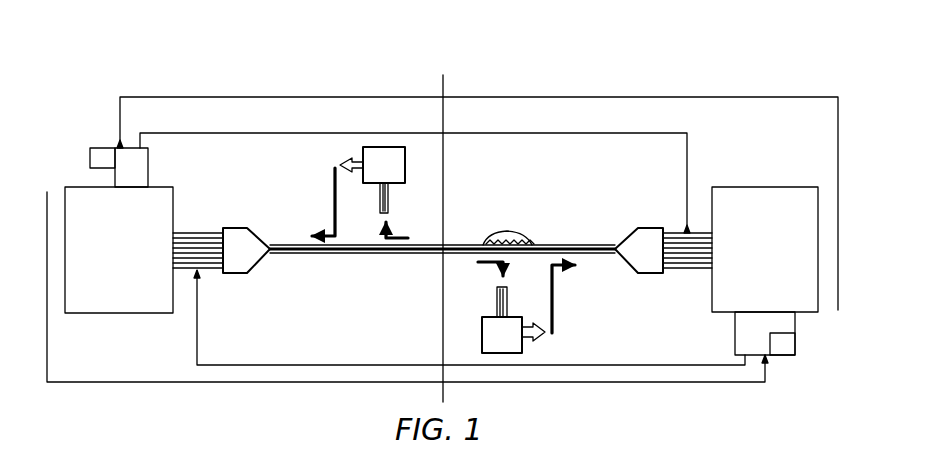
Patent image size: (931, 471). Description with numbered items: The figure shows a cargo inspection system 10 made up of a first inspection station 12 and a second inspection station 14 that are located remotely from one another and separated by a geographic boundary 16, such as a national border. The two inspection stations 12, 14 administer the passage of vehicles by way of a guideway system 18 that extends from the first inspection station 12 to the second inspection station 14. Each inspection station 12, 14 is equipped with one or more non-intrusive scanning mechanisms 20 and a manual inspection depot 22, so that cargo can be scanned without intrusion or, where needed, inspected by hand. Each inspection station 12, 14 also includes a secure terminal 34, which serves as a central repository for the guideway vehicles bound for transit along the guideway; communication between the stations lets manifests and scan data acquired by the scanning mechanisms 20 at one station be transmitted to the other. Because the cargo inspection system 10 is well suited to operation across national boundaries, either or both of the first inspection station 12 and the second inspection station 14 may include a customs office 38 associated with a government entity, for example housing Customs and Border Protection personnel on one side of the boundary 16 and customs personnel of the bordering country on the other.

The cargo inspection system 10 is at (362, 55).
The first inspection station 12 is at (90, 122).
The second inspection station 14 is at (732, 155).
The geographic boundary 16 is at (201, 232).
The guideway system 18 is at (512, 211).
The non-intrusive scanning mechanism 20 is at (379, 198).
The manual inspection depot 22 is at (396, 183).
The secure terminal 34 is at (115, 313).
The customs office 38 is at (90, 160).